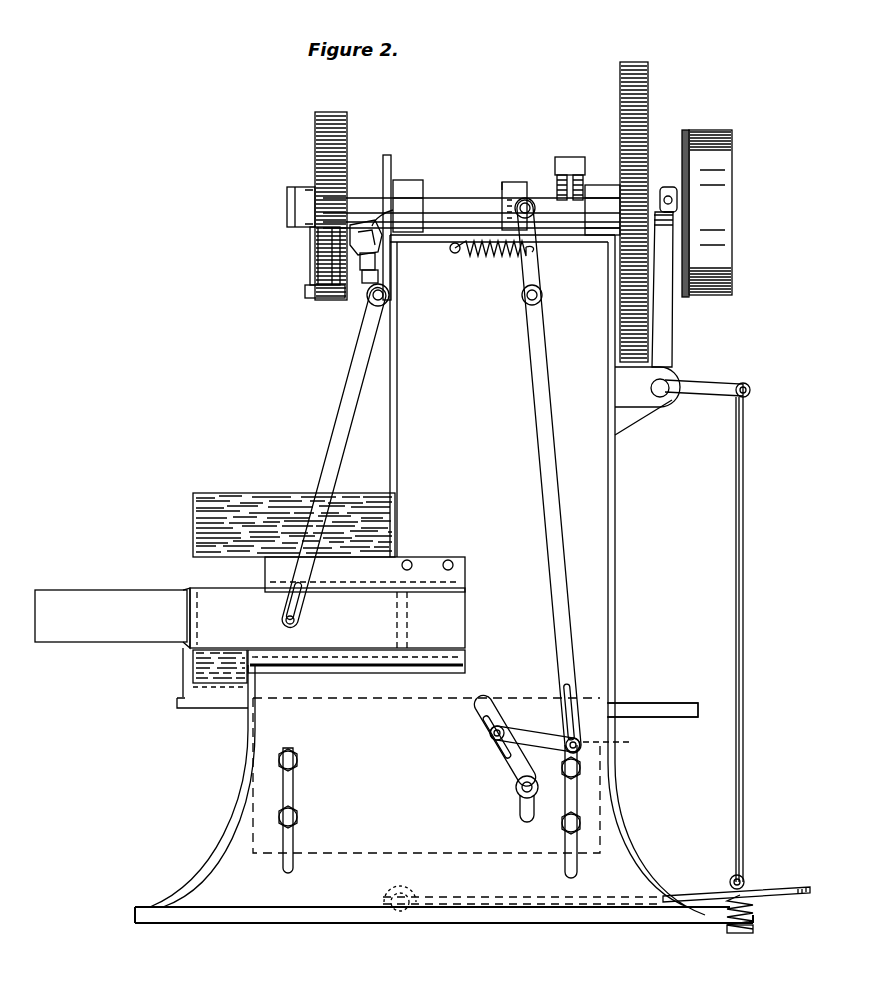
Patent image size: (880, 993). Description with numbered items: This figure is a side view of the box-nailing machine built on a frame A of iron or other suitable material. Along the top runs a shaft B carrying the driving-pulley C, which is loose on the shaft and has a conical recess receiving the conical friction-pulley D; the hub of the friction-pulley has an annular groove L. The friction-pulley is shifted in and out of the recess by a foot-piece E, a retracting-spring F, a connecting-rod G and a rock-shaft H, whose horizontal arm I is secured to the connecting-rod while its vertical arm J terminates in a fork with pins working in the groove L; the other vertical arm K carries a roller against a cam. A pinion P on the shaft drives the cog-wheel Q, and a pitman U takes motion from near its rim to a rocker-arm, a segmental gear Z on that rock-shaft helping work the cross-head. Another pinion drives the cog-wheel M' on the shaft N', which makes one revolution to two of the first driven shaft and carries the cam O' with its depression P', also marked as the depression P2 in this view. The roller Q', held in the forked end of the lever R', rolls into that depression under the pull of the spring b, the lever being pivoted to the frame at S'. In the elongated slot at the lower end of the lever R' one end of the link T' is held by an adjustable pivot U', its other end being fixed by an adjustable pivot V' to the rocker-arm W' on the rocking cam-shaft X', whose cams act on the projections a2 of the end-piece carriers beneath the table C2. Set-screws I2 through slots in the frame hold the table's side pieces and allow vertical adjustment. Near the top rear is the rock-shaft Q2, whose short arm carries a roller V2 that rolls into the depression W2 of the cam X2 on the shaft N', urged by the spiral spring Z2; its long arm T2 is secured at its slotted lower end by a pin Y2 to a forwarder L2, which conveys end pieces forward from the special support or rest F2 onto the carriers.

The frame A is at (444, 579).
The cog-wheel Q is at (331, 194).
The pitman U is at (304, 242).
The pinion P is at (304, 181).
The shaft N' is at (471, 207).
The cam X2 is at (390, 156).
The depression W2 is at (392, 205).
The roller V2 is at (371, 240).
The depression P2 is at (366, 272).
The rock-shaft Q2 is at (366, 300).
The long arm T2 is at (334, 458).
The stud or pin Y2 is at (285, 620).
The cam O' is at (514, 195).
The depression P' is at (482, 174).
The roller Q' is at (533, 185).
The lever R' is at (549, 476).
The pivot S' is at (520, 304).
The spring b is at (492, 260).
The cog-wheel M' is at (642, 200).
The segmental gear Z is at (587, 185).
The shaft B is at (660, 188).
The annular groove L is at (668, 186).
The vertical arm J is at (662, 289).
The friction-pulley D is at (688, 130).
The driving-pulley C is at (710, 212).
The rock-shaft H is at (672, 378).
The horizontal arm I is at (707, 385).
The connecting-rod G is at (746, 643).
The foot-piece E is at (736, 883).
The retracting-spring F is at (756, 908).
The projection a2 is at (653, 701).
The adjustable pivot U' is at (615, 743).
The link T' is at (535, 735).
The adjustable pivot V' is at (472, 729).
The rocker-arm W' is at (503, 740).
The rocking cam-shaft X' is at (502, 799).
The spiral spring Z2 is at (582, 811).
The vertical arm K is at (523, 874).
The set-screw I2 is at (292, 800).
The forwarder L2 is at (250, 618).
The special support or rest F2 is at (193, 690).
The table C2 is at (201, 683).